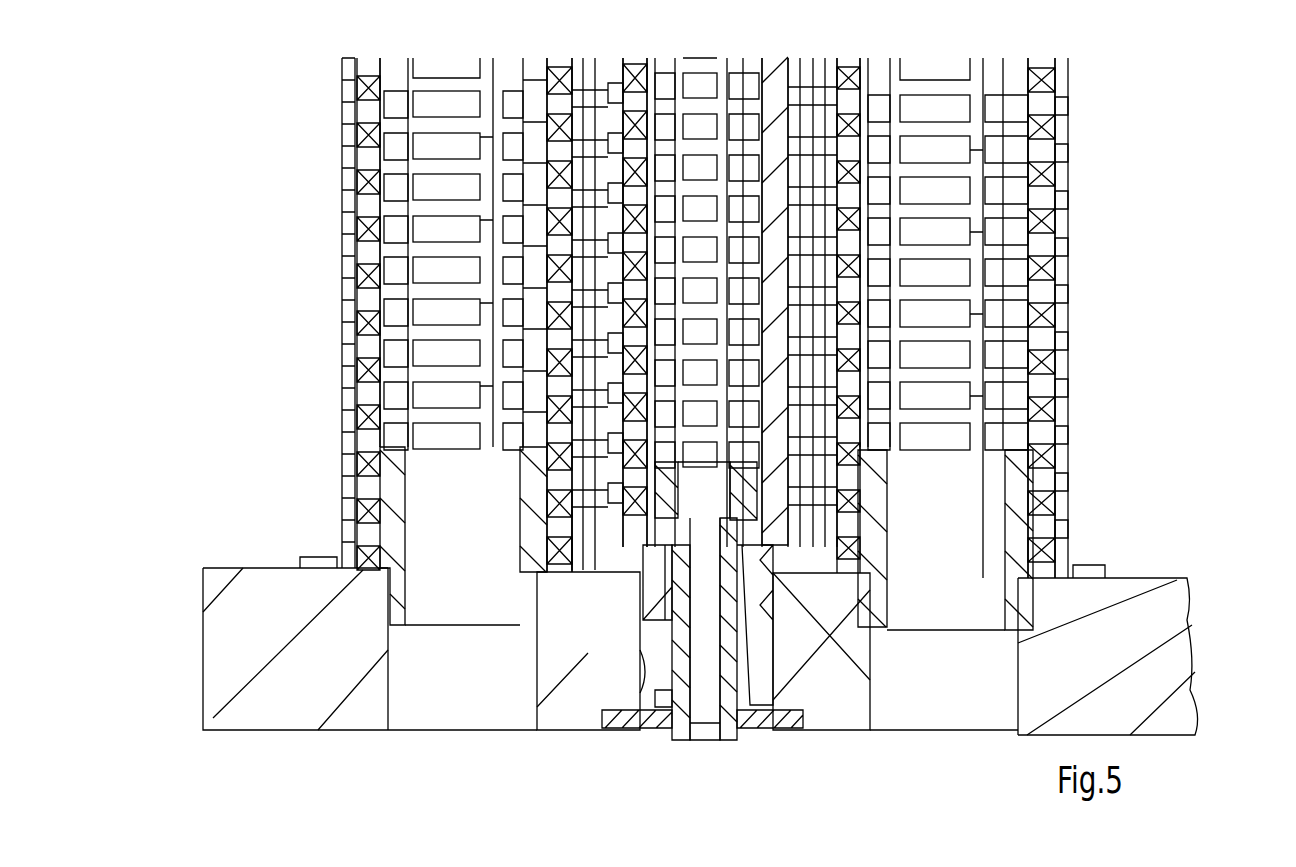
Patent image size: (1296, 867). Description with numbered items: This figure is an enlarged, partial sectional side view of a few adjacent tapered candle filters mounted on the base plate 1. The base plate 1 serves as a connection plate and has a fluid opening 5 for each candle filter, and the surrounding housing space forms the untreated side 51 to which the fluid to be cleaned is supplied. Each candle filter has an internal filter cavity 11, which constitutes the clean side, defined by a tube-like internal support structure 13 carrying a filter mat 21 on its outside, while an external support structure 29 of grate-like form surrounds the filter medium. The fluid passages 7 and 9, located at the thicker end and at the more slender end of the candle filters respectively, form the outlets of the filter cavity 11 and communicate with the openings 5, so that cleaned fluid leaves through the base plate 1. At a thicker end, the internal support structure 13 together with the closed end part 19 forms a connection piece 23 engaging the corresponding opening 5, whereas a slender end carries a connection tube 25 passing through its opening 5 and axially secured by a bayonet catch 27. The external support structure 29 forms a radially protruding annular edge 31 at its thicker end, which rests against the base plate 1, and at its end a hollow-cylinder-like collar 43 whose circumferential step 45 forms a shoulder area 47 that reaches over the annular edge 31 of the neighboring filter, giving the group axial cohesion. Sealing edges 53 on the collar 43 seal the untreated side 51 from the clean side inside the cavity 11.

The base plate 1 is at (1130, 652).
The fluid opening 5 is at (530, 657).
The fluid passage 7 is at (407, 483).
The fluid passage 9 is at (657, 470).
The internal filter cavity 11 is at (460, 105).
The internal support structure 13 is at (378, 518).
The end part 19 is at (380, 540).
The filter mat 21 is at (378, 258).
The connection piece 23 is at (392, 600).
The connection tube 25 is at (735, 660).
The bayonet catch 27 is at (740, 727).
The external support structure 29 is at (352, 150).
The annular edge 31 is at (312, 565).
The collar 43 is at (723, 520).
The circumferential step 45 is at (802, 588).
The shoulder area 47 is at (605, 573).
The untreated side 51 is at (603, 520).
The sealing edge 53 is at (643, 597).